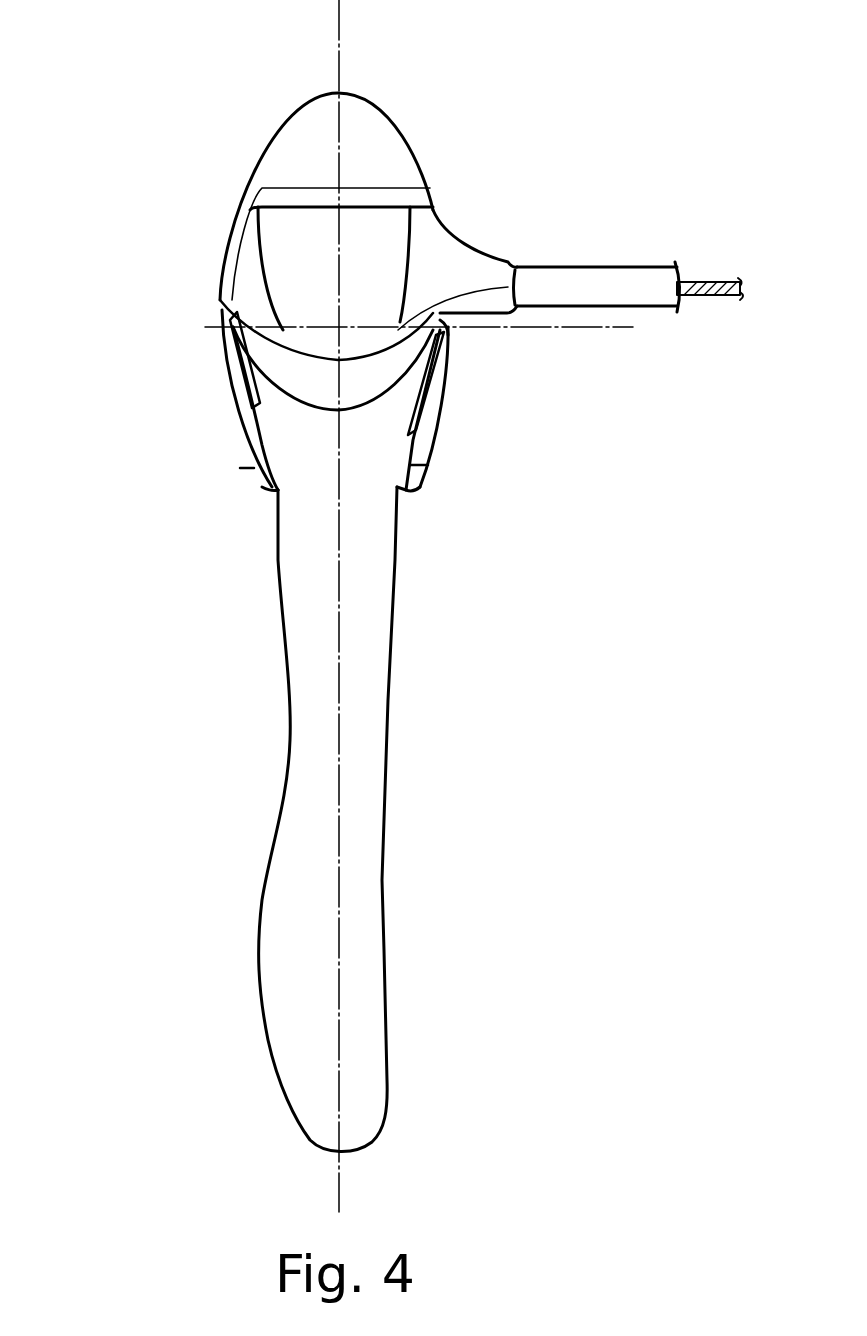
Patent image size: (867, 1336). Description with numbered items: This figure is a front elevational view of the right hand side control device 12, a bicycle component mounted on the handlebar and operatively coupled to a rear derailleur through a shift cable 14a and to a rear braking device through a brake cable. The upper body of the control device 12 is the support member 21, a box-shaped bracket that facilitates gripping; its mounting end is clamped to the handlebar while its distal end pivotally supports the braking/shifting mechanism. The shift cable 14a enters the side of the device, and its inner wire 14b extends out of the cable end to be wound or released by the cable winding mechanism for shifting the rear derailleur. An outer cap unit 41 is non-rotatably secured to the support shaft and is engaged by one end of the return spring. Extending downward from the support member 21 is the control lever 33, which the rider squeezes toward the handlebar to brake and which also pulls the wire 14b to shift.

The control device 12 is at (440, 105).
The outer cap unit 41 is at (430, 247).
The shift cable 14a is at (586, 267).
The wire 14b is at (700, 282).
The support member 21 is at (432, 410).
The control lever 33 is at (377, 560).